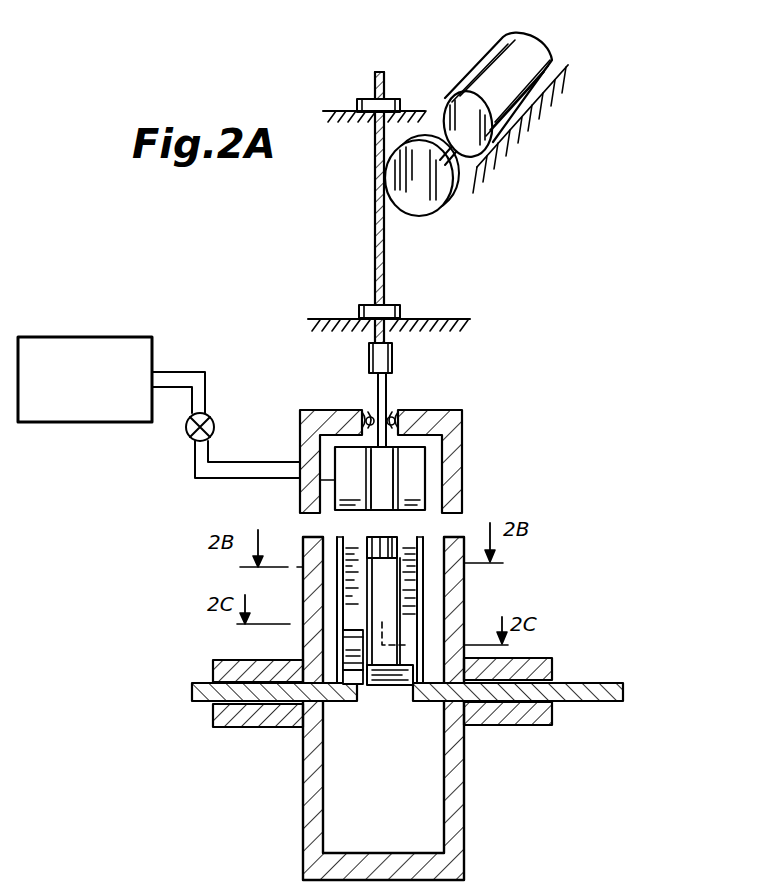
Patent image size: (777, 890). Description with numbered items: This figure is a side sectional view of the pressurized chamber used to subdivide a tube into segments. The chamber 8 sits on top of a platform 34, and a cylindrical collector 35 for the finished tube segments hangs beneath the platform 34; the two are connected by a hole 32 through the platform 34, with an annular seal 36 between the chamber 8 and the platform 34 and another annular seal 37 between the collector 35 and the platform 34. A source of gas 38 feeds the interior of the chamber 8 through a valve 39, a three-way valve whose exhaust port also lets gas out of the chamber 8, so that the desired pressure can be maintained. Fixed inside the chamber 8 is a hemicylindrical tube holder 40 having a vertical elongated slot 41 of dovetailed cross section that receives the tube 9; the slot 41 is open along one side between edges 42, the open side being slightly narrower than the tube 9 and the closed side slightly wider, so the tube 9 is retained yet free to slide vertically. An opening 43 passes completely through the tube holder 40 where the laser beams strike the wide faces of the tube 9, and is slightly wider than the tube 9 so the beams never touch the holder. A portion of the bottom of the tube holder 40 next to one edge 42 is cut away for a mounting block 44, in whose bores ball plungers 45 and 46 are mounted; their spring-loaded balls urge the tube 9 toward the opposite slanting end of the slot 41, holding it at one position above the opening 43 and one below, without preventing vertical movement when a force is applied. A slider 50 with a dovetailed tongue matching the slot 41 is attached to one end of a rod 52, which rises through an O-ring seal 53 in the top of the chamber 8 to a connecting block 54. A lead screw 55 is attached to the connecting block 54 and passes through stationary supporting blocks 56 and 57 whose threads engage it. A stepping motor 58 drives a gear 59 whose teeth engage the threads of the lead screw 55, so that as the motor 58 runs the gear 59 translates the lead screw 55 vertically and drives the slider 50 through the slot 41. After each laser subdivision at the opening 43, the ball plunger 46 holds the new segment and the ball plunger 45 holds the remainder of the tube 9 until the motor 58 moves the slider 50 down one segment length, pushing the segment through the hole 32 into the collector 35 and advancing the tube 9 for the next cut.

The chamber 8 is at (458, 476).
The tube 9 is at (425, 580).
The hole 32 is at (410, 696).
The platform 34 is at (600, 684).
The cylindrical collector 35 is at (466, 808).
The annular seal 36 is at (553, 679).
The annular seal 37 is at (553, 704).
The source of gas 38 is at (136, 337).
The valve 39 is at (215, 425).
The tube holder 40 is at (452, 497).
The slot 41 is at (388, 470).
The edges 42 is at (345, 594).
The opening 43 is at (405, 645).
The mounting block 44 is at (345, 657).
The ball plunger 45 is at (345, 620).
The ball plunger 46 is at (353, 678).
The slider 50 is at (360, 538).
The rod 52 is at (380, 480).
The O-ring seal 53 is at (398, 412).
The connecting block 54 is at (393, 362).
The lead screw 55 is at (385, 84).
The supporting block 56 is at (401, 104).
The supporting block 57 is at (401, 310).
The stepping motor 58 is at (540, 47).
The gear 59 is at (443, 201).